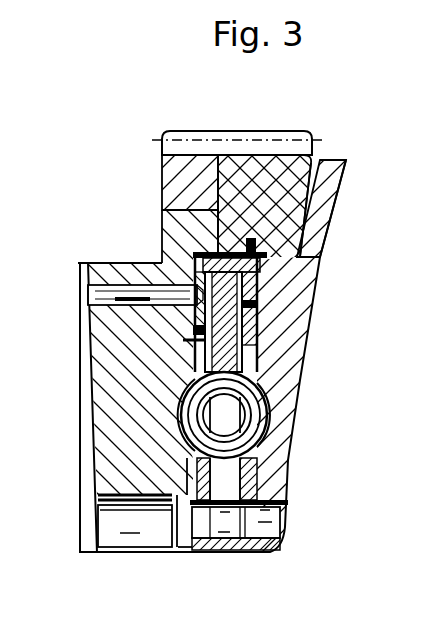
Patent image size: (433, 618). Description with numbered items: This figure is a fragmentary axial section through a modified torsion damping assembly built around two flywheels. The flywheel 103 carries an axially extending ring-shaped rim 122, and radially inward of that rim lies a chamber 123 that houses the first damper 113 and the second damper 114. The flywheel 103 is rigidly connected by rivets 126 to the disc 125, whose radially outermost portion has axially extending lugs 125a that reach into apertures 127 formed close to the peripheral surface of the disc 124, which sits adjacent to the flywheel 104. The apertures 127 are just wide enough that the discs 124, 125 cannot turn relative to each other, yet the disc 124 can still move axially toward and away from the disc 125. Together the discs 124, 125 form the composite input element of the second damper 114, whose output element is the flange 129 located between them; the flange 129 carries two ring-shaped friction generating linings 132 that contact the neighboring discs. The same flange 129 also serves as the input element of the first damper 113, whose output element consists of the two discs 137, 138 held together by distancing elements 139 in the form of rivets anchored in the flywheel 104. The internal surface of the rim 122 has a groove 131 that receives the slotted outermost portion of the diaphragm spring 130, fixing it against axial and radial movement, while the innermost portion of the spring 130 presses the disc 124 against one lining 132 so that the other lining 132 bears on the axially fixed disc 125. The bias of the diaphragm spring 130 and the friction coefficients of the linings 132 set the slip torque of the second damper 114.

The flywheel 103 is at (90, 332).
The flywheel 104 is at (330, 195).
The first damper 113 is at (177, 448).
The second damper 114 is at (320, 160).
The rim 122 is at (282, 163).
The chamber 123 is at (147, 262).
The disc 124 is at (262, 312).
The disc 125 is at (162, 257).
The lugs 125a is at (162, 213).
The rivets 126 is at (88, 295).
The apertures 127 is at (247, 240).
The flange 129 is at (190, 372).
The diaphragm spring 130 is at (268, 284).
The groove 131 is at (313, 223).
The friction generating linings 132 is at (196, 322).
The disc 137 is at (147, 507).
The disc 138 is at (265, 480).
The distancing elements 139 is at (237, 538).